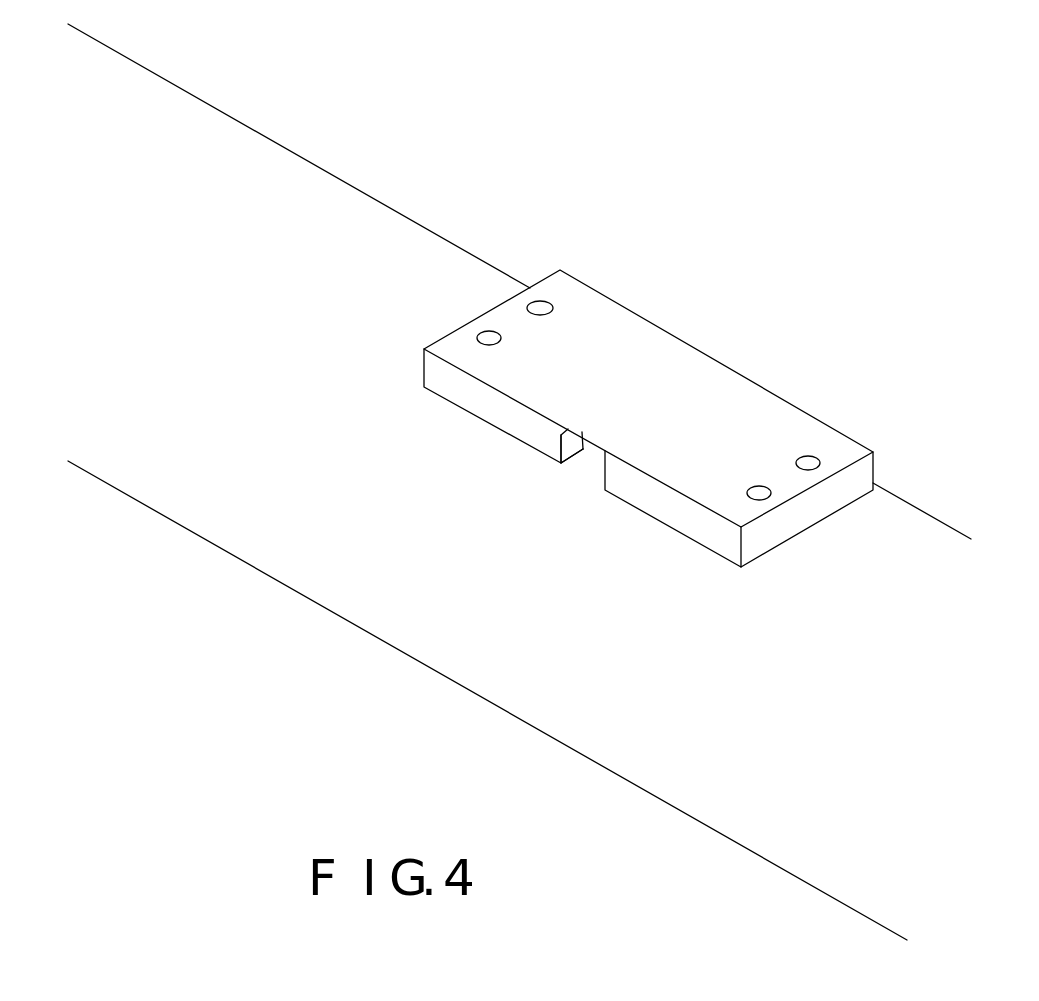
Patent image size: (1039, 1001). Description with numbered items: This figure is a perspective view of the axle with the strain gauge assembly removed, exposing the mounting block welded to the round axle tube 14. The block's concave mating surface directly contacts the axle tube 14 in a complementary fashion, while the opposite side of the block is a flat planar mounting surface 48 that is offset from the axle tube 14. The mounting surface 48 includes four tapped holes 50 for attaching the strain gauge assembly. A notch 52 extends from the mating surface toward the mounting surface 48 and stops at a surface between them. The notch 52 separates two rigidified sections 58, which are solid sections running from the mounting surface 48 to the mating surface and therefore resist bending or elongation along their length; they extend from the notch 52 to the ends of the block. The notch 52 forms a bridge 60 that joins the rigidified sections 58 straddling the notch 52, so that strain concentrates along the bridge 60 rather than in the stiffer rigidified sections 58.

The axle tube 14 is at (346, 183).
The mounting surface 48 is at (683, 377).
The tapped holes 50 is at (485, 330).
The notch 52 is at (585, 465).
The rigidified sections 58 is at (488, 412).
The bridge 60 is at (582, 447).